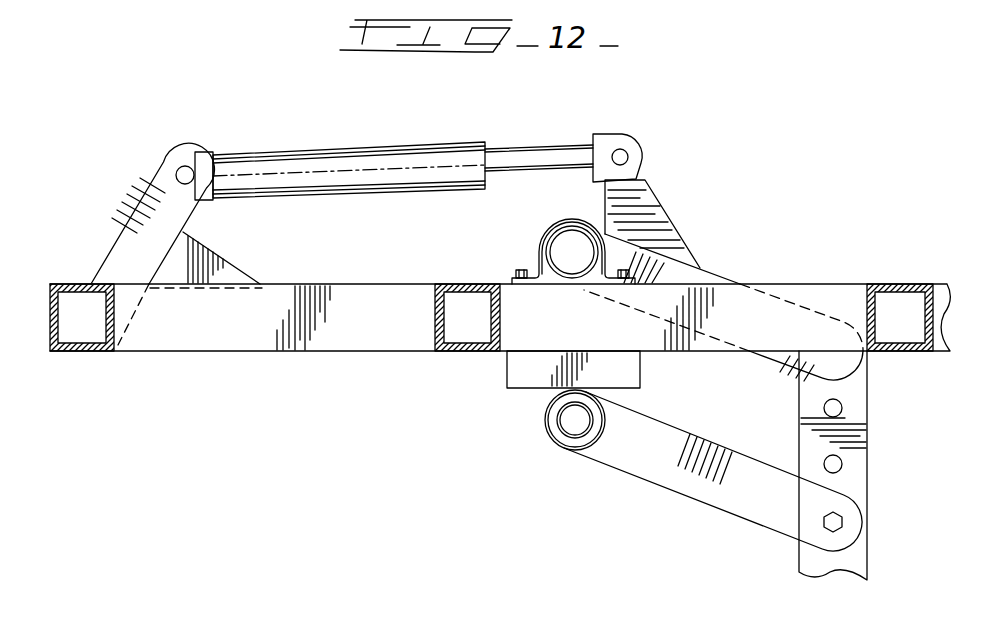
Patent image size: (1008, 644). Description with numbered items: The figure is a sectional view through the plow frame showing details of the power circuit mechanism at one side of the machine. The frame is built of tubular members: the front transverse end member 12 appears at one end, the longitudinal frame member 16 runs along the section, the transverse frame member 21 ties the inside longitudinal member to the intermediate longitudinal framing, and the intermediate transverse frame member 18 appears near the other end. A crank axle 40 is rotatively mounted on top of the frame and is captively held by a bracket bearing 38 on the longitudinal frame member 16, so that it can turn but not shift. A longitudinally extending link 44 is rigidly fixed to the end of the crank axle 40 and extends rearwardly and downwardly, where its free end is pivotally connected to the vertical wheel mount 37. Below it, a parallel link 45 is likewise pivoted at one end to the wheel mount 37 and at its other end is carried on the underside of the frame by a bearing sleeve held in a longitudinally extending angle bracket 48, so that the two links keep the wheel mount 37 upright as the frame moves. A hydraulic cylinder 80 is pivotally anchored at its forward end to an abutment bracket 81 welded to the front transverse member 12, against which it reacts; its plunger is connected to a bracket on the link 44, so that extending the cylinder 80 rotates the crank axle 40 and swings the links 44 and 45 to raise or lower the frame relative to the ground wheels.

The front transverse end member 12 is at (108, 346).
The longitudinal frame member 16 is at (786, 290).
The intermediate transverse frame member 18 is at (895, 353).
The transverse frame member 21 is at (455, 352).
The wheel mount 37 is at (858, 423).
The bracket bearing 38 is at (544, 230).
The crank axle 40 is at (572, 224).
The longitudinally extending link 44 is at (700, 278).
The parallel link 45 is at (657, 465).
The angle bracket 48 is at (520, 390).
The hydraulic cylinder 80 is at (332, 162).
The abutment bracket 81 is at (132, 245).